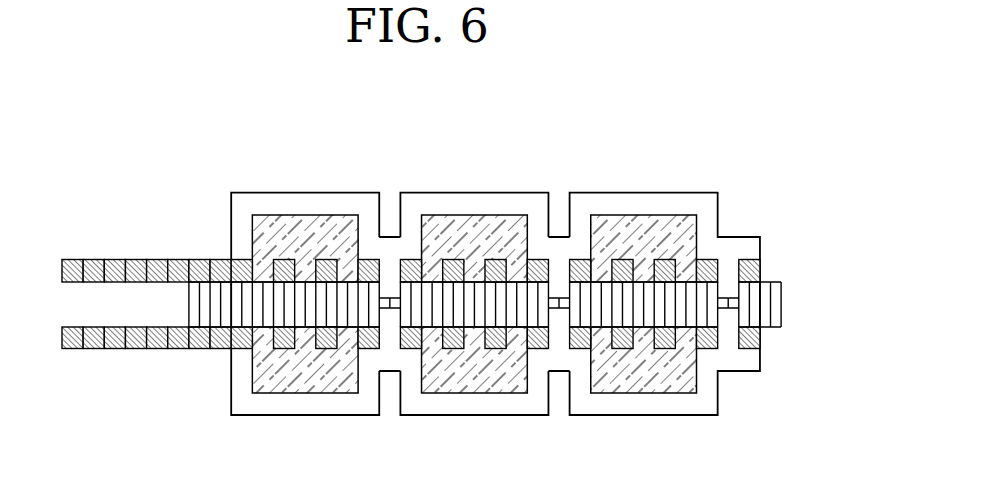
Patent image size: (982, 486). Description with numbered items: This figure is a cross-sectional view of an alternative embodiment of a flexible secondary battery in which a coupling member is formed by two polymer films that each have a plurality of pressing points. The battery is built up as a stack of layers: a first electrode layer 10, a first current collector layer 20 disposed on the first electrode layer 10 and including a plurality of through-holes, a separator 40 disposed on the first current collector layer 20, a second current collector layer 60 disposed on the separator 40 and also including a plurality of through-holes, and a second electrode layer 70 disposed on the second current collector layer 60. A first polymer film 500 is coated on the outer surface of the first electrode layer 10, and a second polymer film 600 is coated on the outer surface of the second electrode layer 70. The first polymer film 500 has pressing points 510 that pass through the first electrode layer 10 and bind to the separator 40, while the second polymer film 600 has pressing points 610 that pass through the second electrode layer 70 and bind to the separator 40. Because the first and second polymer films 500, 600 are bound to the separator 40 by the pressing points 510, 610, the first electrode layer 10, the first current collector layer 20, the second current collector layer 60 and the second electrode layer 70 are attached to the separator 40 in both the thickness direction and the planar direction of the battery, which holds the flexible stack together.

The first electrode layer 10 is at (645, 383).
The first current collector layer 20 is at (760, 338).
The separator 40 is at (781, 304).
The second current collector layer 60 is at (760, 271).
The second electrode layer 70 is at (647, 222).
The first polymer film 500 is at (475, 407).
The pressing points 510 is at (392, 372).
The second polymer film 600 is at (473, 197).
The pressing points 610 is at (392, 236).